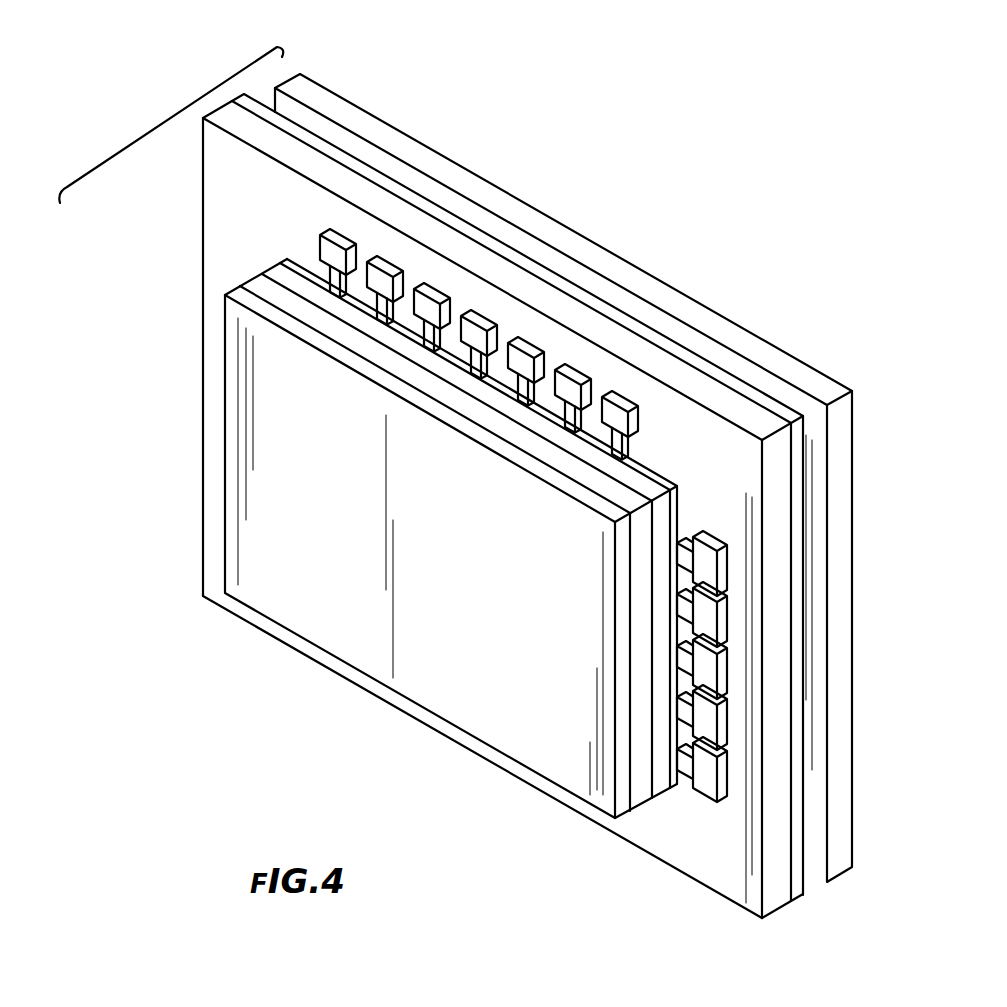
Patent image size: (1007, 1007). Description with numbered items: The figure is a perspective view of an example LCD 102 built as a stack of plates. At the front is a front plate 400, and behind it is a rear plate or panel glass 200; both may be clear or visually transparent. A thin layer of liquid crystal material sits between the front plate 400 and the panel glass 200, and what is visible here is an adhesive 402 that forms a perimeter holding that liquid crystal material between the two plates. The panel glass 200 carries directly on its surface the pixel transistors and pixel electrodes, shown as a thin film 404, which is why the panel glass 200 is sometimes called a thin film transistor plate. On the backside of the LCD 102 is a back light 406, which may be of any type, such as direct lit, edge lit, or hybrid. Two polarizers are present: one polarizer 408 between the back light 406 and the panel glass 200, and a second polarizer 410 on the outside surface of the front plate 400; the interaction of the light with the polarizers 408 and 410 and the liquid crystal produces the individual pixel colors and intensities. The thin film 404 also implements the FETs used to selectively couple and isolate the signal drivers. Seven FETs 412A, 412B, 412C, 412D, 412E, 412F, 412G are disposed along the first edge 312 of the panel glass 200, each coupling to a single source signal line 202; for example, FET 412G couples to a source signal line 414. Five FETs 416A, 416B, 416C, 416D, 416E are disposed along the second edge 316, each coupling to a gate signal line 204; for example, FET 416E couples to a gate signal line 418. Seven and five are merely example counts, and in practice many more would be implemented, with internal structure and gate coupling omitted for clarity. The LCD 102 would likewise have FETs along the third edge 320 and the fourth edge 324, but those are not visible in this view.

The LCD 102 is at (168, 108).
The panel glass 200 is at (258, 177).
The source signal line 202 is at (517, 259).
The gate signal line 204 is at (828, 702).
The first edge 312 is at (278, 152).
The second edge 316 is at (780, 488).
The third edge 320 is at (640, 848).
The fourth edge 324 is at (203, 393).
The front plate 400 is at (277, 273).
The adhesive 402 is at (254, 287).
The thin film 404 is at (677, 505).
The back light 406 is at (752, 343).
The polarizer 408 is at (797, 444).
The second polarizer 410 is at (558, 613).
The FET 412A is at (333, 252).
The FET 412B is at (380, 279).
The FET 412C is at (427, 306).
The FET 412D is at (474, 333).
The FET 412E is at (521, 360).
The FET 412F is at (568, 387).
The FET 412G is at (699, 354).
The source signal line 414 is at (667, 443).
The FET 416A is at (710, 560).
The FET 416B is at (713, 613).
The FET 416C is at (708, 668).
The FET 416D is at (712, 727).
The FET 416E is at (712, 778).
The gate signal line 418 is at (669, 767).